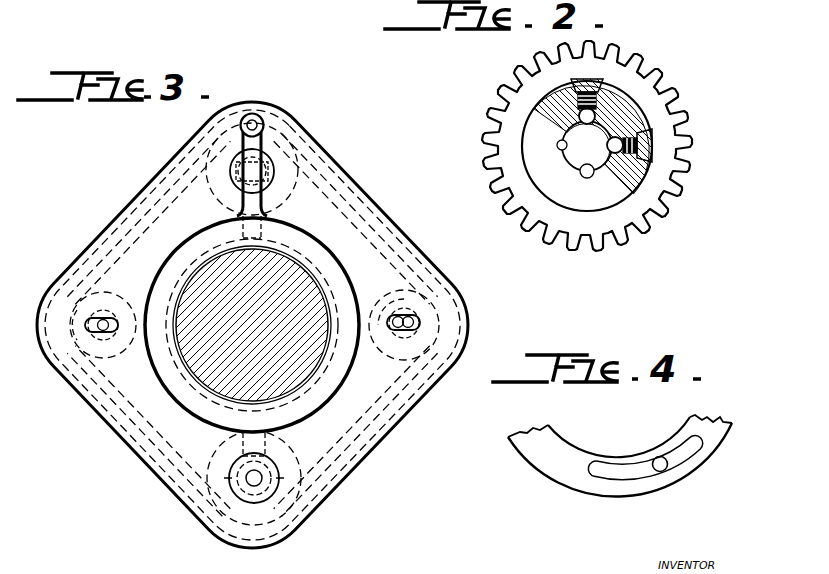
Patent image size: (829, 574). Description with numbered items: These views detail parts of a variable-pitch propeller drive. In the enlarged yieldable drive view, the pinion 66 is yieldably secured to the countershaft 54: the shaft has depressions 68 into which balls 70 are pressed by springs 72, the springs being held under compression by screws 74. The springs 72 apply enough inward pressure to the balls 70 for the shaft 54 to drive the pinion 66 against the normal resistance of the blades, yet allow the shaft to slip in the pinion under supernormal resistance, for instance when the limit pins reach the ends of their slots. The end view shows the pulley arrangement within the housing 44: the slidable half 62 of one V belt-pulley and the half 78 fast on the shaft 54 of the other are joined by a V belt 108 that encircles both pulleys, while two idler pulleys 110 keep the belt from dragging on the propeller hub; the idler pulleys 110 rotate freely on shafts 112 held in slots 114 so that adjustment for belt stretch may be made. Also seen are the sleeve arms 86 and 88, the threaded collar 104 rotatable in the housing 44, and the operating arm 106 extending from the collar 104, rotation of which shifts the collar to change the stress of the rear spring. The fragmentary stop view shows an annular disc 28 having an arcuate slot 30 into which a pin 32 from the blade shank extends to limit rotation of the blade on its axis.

In FIG. 4, the annular disc 28 is at (568, 475).
In FIG. 4, the arcuate slot 30 is at (645, 473).
In FIG. 4, the pin 32 is at (658, 458).
In FIG. 3, the housing 44 is at (177, 155).
In FIG. 2, the countershaft 54 is at (563, 160).
In FIG. 3, the pulley half 62 is at (313, 495).
In FIG. 2, the pinion 66 is at (653, 67).
In FIG. 2, the depression 68 is at (562, 142).
In FIG. 2, the ball 70 is at (596, 113).
In FIG. 2, the spring 72 is at (652, 122).
In FIG. 2, the screw 74 is at (650, 149).
In FIG. 3, the pulley half 78 is at (330, 152).
In FIG. 3, the arm 86 is at (217, 225).
In FIG. 3, the arm 88 is at (284, 441).
In FIG. 3, the collar 104 is at (356, 273).
In FIG. 3, the operating arm 106 is at (267, 160).
In FIG. 3, the V belt 108 is at (350, 431).
In FIG. 3, the idler pulley 110 is at (92, 284).
In FIG. 3, the shaft 112 is at (100, 330).
In FIG. 3, the slot 114 is at (102, 324).